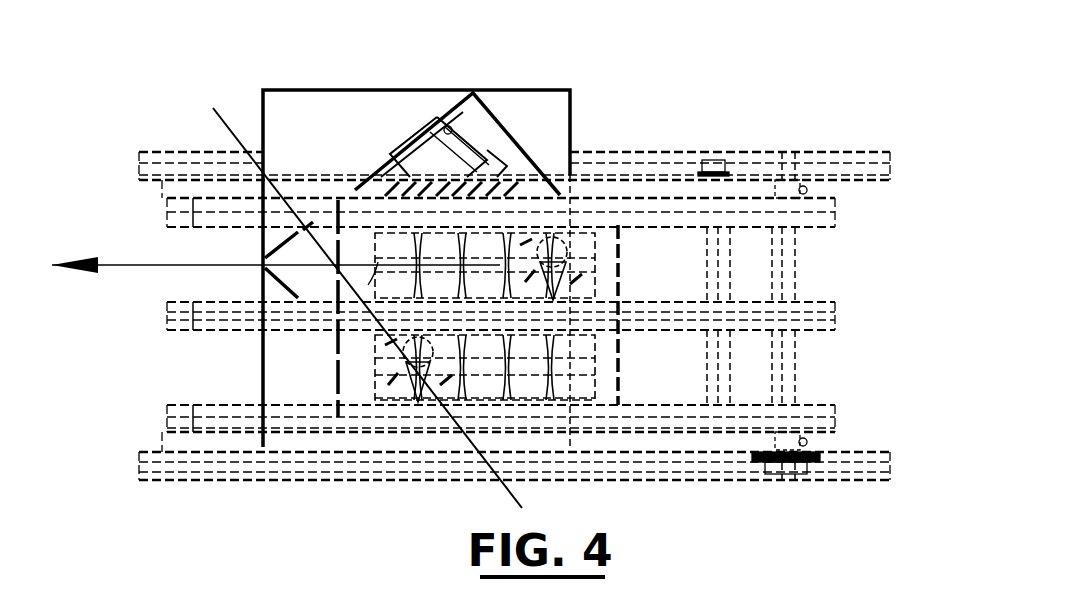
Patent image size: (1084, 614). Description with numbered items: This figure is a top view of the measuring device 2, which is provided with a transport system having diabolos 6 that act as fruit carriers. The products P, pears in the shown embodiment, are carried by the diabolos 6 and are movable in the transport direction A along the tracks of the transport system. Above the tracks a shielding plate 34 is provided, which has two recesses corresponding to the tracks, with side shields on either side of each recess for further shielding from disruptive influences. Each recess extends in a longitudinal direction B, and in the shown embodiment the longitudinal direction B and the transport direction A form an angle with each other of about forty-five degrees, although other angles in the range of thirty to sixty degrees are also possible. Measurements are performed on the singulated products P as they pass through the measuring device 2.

The measuring device 2 is at (660, 82).
The shielding plate 34 is at (296, 100).
The products P is at (593, 243).
The diabolos 6 is at (590, 398).
The transport direction A is at (276, 252).
The longitudinal direction B is at (367, 295).